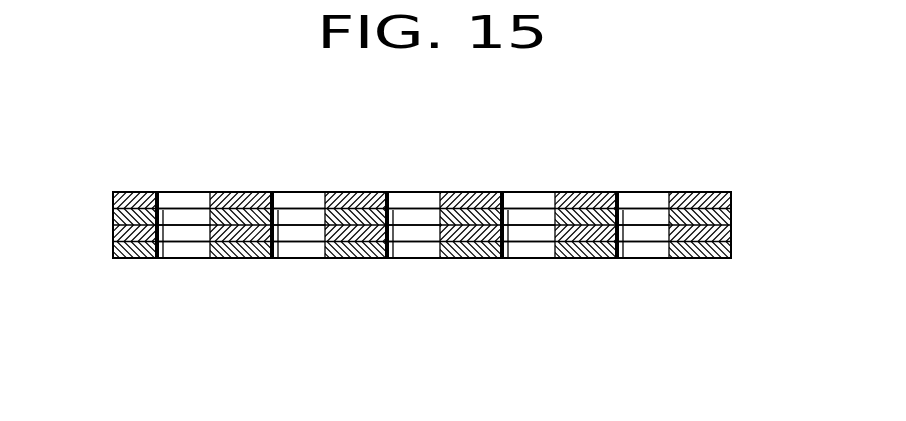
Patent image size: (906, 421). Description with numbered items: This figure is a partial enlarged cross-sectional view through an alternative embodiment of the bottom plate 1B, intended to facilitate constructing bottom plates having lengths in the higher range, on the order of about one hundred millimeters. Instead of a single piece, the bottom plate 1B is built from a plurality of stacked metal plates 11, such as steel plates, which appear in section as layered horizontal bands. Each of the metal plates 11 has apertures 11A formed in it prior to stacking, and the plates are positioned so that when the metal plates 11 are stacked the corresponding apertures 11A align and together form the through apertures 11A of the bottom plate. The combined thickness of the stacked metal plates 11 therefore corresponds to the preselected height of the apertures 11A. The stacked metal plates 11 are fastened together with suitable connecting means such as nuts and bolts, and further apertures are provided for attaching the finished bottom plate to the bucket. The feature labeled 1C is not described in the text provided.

The bottom plate 1B is at (350, 192).
The groove (3B1, 6B1, 9B1) 1C is at (183, 228).
The metal plate 11 is at (727, 203).
The aperture 11A is at (513, 248).